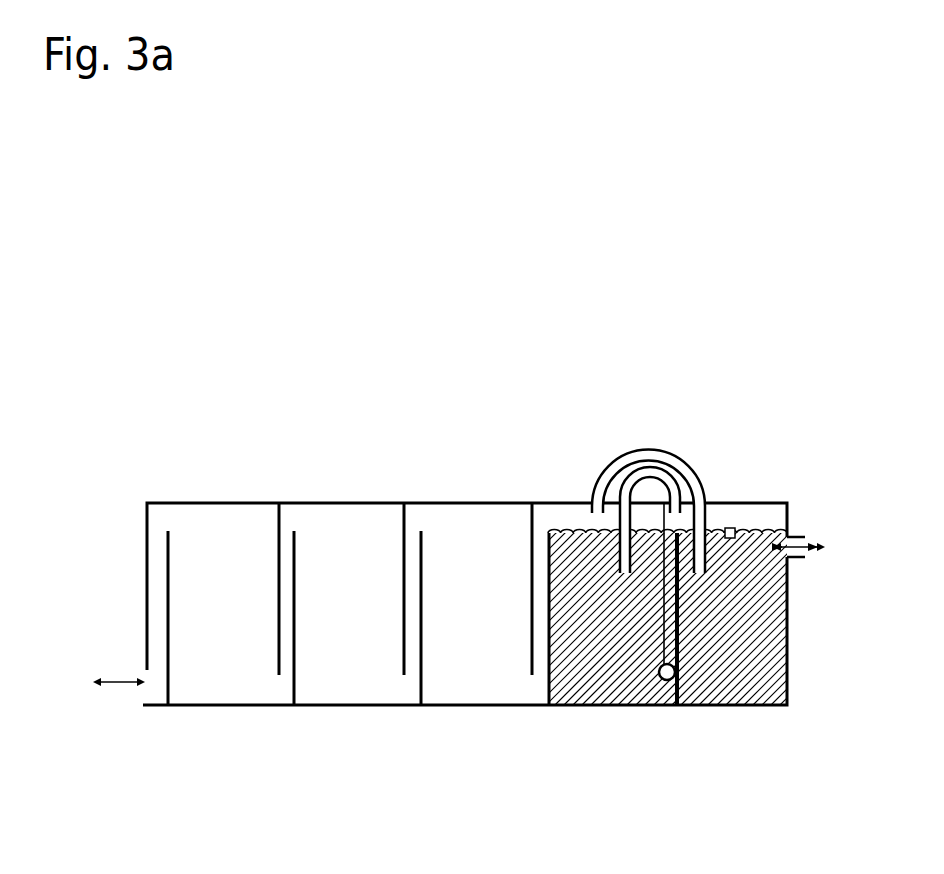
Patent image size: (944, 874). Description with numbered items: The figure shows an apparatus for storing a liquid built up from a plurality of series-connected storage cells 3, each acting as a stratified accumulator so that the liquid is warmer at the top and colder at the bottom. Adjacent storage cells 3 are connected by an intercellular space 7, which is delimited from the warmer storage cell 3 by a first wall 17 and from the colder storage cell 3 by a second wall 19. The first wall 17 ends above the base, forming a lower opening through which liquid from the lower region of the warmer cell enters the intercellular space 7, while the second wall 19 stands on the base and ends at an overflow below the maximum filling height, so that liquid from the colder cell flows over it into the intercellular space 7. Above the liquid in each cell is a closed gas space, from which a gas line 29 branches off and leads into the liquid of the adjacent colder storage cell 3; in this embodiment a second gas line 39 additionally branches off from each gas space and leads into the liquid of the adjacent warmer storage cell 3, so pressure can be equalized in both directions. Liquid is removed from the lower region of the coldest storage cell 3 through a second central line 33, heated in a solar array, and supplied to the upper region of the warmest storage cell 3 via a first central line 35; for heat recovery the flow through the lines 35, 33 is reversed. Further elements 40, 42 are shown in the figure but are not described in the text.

The storage cell 3 is at (477, 683).
The intercellular space 7 is at (664, 681).
The first wall 17 is at (662, 632).
The second wall 19 is at (679, 631).
The gas line 29 is at (693, 456).
The second central line 33 is at (812, 541).
The first central line 35 is at (143, 693).
The second gas line 39 is at (623, 465).
The suspension wire 40 is at (668, 683).
The level sensor 42 is at (730, 527).